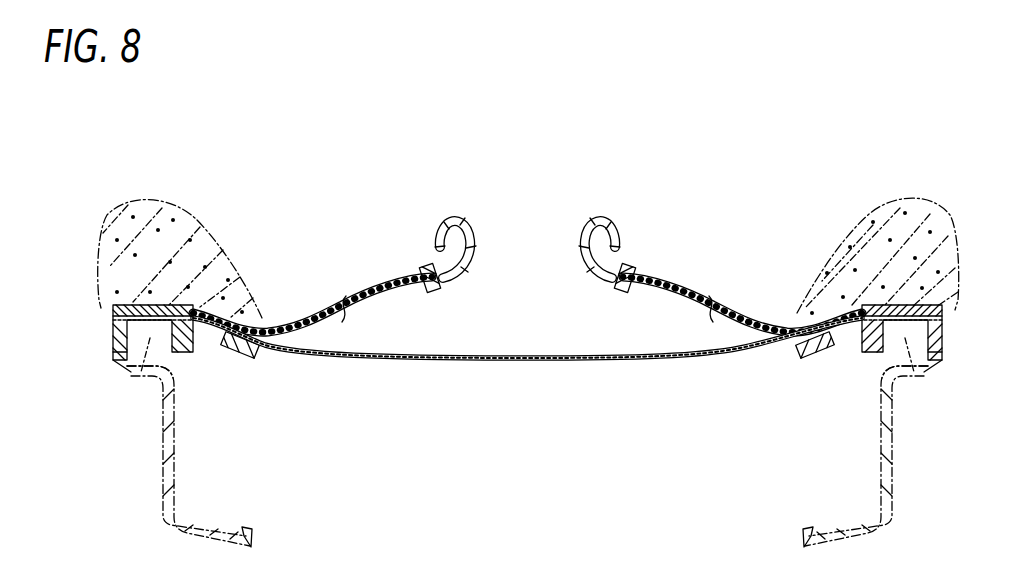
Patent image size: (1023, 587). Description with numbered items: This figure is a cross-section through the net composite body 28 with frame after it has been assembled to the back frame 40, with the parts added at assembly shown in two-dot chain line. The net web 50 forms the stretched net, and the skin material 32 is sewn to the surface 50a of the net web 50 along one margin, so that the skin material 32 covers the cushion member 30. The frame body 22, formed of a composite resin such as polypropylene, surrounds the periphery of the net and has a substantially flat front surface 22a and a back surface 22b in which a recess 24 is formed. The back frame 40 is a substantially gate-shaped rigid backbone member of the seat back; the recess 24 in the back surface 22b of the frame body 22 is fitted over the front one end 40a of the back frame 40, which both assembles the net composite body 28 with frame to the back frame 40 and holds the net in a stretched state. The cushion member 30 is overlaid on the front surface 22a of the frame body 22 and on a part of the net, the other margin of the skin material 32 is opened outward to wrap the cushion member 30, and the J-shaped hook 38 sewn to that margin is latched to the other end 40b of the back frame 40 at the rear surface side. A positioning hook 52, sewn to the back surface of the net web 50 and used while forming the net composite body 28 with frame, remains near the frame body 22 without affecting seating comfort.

The frame body 22 is at (113, 324).
The front surface 22a is at (137, 304).
The back surface 22b is at (131, 364).
The recess 24 is at (124, 338).
The net composite body with frame 28 is at (555, 206).
The cushion member 30 is at (176, 224).
The skin material 32 is at (364, 292).
The hook 38 is at (450, 226).
The back frame 40 is at (163, 464).
The one end of the back frame 40a is at (148, 358).
The other end of the back frame 40b is at (248, 526).
The net web 50 is at (546, 353).
The surface of the net web 50a is at (489, 354).
The positioning hook 52 is at (247, 358).